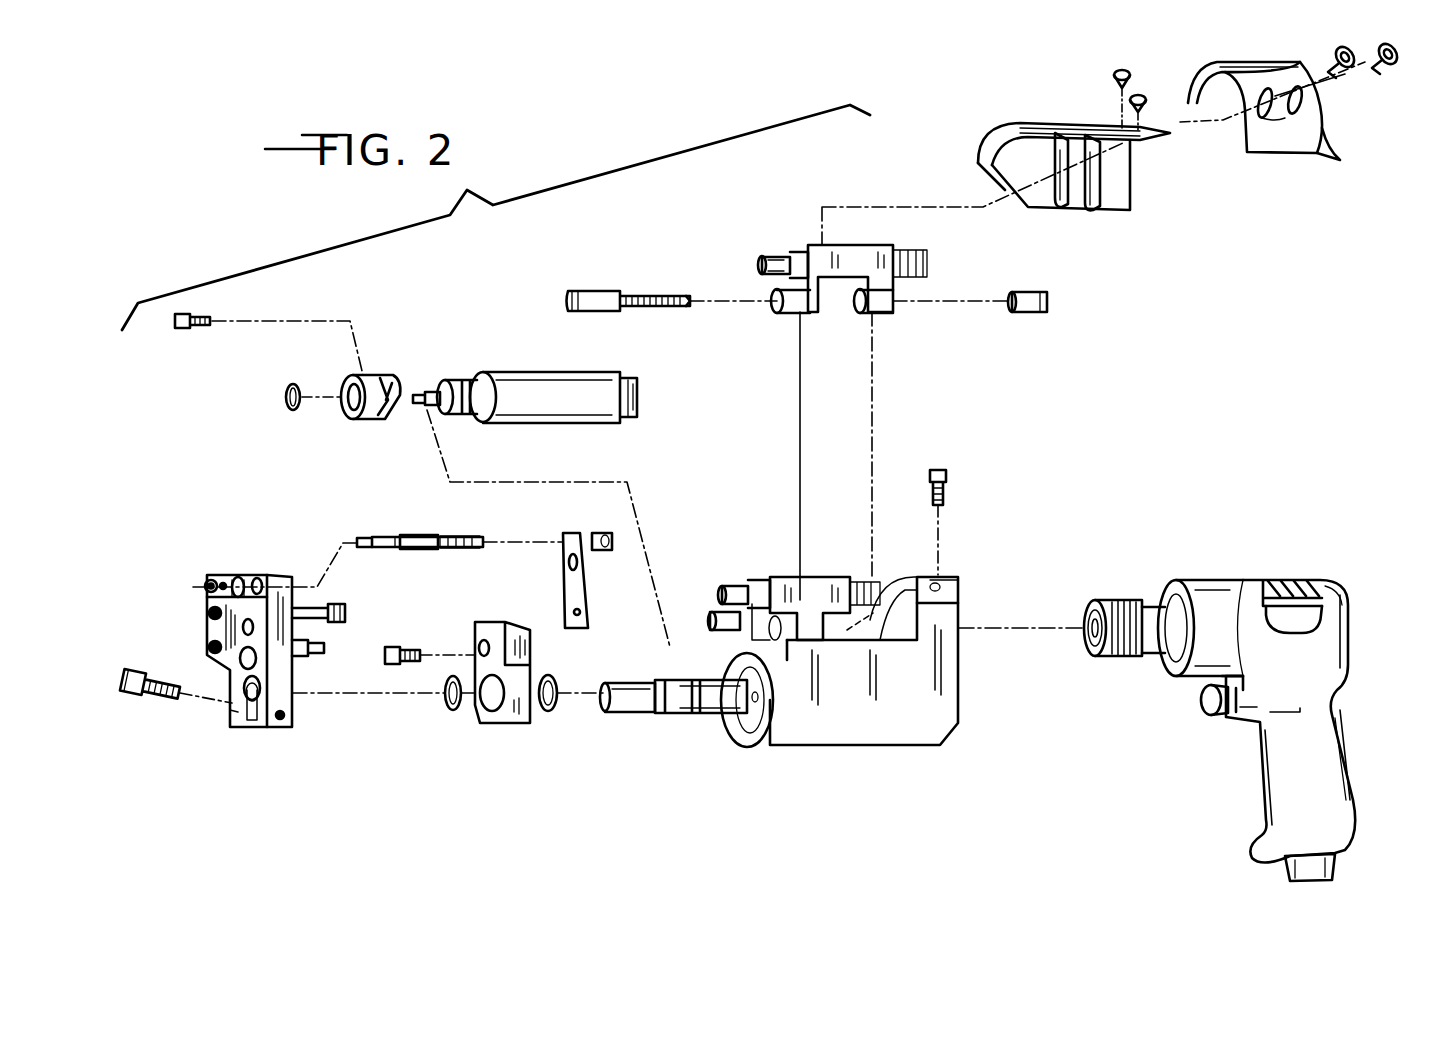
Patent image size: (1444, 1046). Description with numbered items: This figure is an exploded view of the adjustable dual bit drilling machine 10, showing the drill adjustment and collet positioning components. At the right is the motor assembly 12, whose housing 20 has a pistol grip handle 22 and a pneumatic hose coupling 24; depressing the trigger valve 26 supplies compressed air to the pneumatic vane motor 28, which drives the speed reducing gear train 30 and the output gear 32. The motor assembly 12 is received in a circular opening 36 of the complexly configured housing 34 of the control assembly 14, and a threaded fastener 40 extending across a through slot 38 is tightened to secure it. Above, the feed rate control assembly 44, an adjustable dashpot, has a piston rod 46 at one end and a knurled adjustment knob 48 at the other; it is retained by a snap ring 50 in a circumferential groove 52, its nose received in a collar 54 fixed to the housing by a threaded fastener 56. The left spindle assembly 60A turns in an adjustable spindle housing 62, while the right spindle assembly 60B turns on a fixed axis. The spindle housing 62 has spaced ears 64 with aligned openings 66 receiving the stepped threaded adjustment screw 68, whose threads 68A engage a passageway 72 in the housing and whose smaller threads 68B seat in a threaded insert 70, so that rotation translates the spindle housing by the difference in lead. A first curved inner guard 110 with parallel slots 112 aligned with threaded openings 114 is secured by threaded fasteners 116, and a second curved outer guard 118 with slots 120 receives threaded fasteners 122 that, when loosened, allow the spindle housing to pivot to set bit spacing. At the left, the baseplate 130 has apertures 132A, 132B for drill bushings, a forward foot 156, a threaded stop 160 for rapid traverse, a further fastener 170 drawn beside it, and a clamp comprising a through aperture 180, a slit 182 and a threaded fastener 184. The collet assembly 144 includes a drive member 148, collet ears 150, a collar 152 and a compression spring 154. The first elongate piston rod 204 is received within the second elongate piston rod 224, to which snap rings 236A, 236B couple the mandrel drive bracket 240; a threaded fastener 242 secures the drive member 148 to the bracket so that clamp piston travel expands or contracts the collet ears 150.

The adjustable dual bit drilling machine 10 is at (1195, 398).
The motor assembly 12 is at (1290, 520).
The control assembly 14 is at (968, 525).
The housing 20 is at (1347, 652).
The pistol grip handle 22 is at (1352, 752).
The pneumatic hose coupling 24 is at (1285, 868).
The trigger valve 26 is at (1200, 714).
The pneumatic vane motor 28 is at (1295, 582).
The speed reducing gear train 30 is at (1188, 580).
The output gear 32 is at (1103, 600).
The housing 34 is at (832, 748).
The circular opening 36 is at (872, 615).
The through slot 38 is at (958, 602).
The threaded fastener 40 is at (950, 478).
The feed rate control assembly 44 is at (590, 378).
The piston rod 46 is at (432, 392).
The knurled adjustment knob 48 is at (640, 410).
The snap ring 50 is at (296, 410).
The circumferential groove 52 is at (460, 380).
The collar 54 is at (368, 420).
The threaded fastener 56 is at (183, 328).
The left spindle assembly 60A is at (768, 258).
The right spindle assembly 60B is at (745, 575).
The adjustable spindle housing 62 is at (890, 250).
The ears 64 is at (785, 312).
The openings 66 is at (778, 300).
The threaded adjustment screw 68 is at (590, 292).
The first region of threads 68A is at (640, 297).
The second region of smaller threads 68B is at (688, 310).
The threaded insert 70 is at (1047, 310).
The passageway 72 is at (812, 587).
The first curved inner guard 110 is at (1138, 205).
The parallel slots 112 is at (1080, 210).
The threaded openings 114 is at (860, 245).
The threaded fasteners 116 is at (1148, 102).
The second curved outer guard 118 is at (1270, 140).
The parallel slots 120 is at (1340, 160).
The threaded fasteners 122 is at (1387, 67).
The baseplate 130 is at (300, 720).
The aperture 132A is at (262, 583).
The aperture 132B is at (225, 583).
The collet assembly 144 is at (412, 550).
The drive member 148 is at (588, 572).
The collet ears 150 is at (375, 537).
The collar 152 is at (602, 533).
The compression spring 154 is at (458, 537).
The forward foot 156 is at (207, 580).
The threaded stop 160 is at (315, 655).
The bolt 170 is at (345, 612).
The through aperture 180 is at (252, 730).
The slit 182 is at (240, 712).
The threaded fastener 184 is at (158, 705).
The first elongate piston rod 204 is at (630, 715).
The second elongate piston rod 224 is at (705, 715).
The snap ring 236A is at (452, 712).
The snap ring 236B is at (550, 712).
The mandrel drive bracket 240 is at (535, 667).
The threaded fastener 242 is at (400, 668).